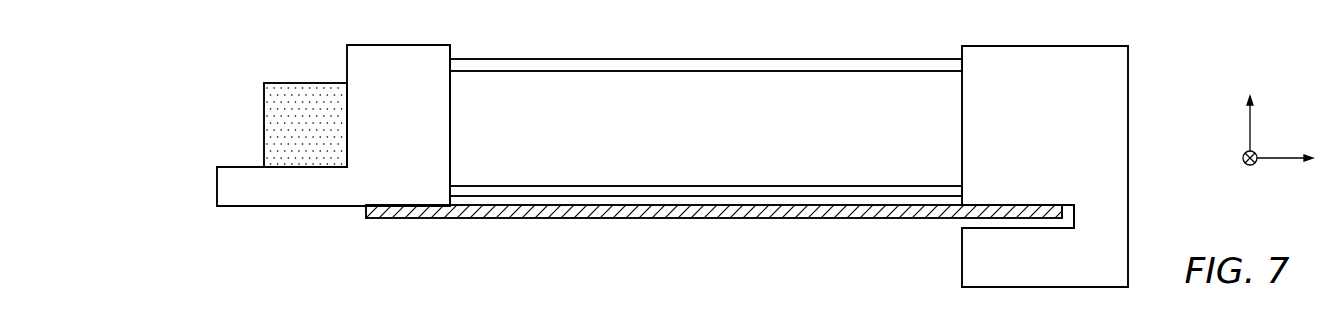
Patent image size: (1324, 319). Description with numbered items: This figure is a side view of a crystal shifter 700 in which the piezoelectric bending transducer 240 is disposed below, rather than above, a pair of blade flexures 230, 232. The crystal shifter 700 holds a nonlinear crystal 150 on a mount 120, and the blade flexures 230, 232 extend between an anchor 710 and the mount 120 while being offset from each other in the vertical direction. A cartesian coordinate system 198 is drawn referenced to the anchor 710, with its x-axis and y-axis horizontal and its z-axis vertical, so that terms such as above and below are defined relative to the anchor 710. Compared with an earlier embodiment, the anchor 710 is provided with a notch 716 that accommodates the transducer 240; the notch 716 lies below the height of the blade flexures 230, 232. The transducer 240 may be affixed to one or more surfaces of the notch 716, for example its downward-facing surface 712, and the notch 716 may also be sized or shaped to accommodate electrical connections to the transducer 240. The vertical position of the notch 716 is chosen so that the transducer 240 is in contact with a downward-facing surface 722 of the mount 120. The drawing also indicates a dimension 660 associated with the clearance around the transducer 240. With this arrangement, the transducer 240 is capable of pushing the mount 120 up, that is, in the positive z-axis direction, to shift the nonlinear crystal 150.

The crystal shifter 700 is at (246, 52).
The nonlinear crystal 150 is at (292, 135).
The mount 120 is at (386, 150).
The blade flexure 232 is at (762, 72).
The blade flexure 230 is at (763, 185).
The transducer 240 is at (558, 219).
The downward-facing surface 722 is at (397, 208).
The anchor 710 is at (1037, 119).
The downward-facing surface 712 is at (995, 208).
The notch 716 is at (1067, 229).
The gap distance 660 is at (878, 167).
The cartesian coordinate system 198 is at (1239, 111).